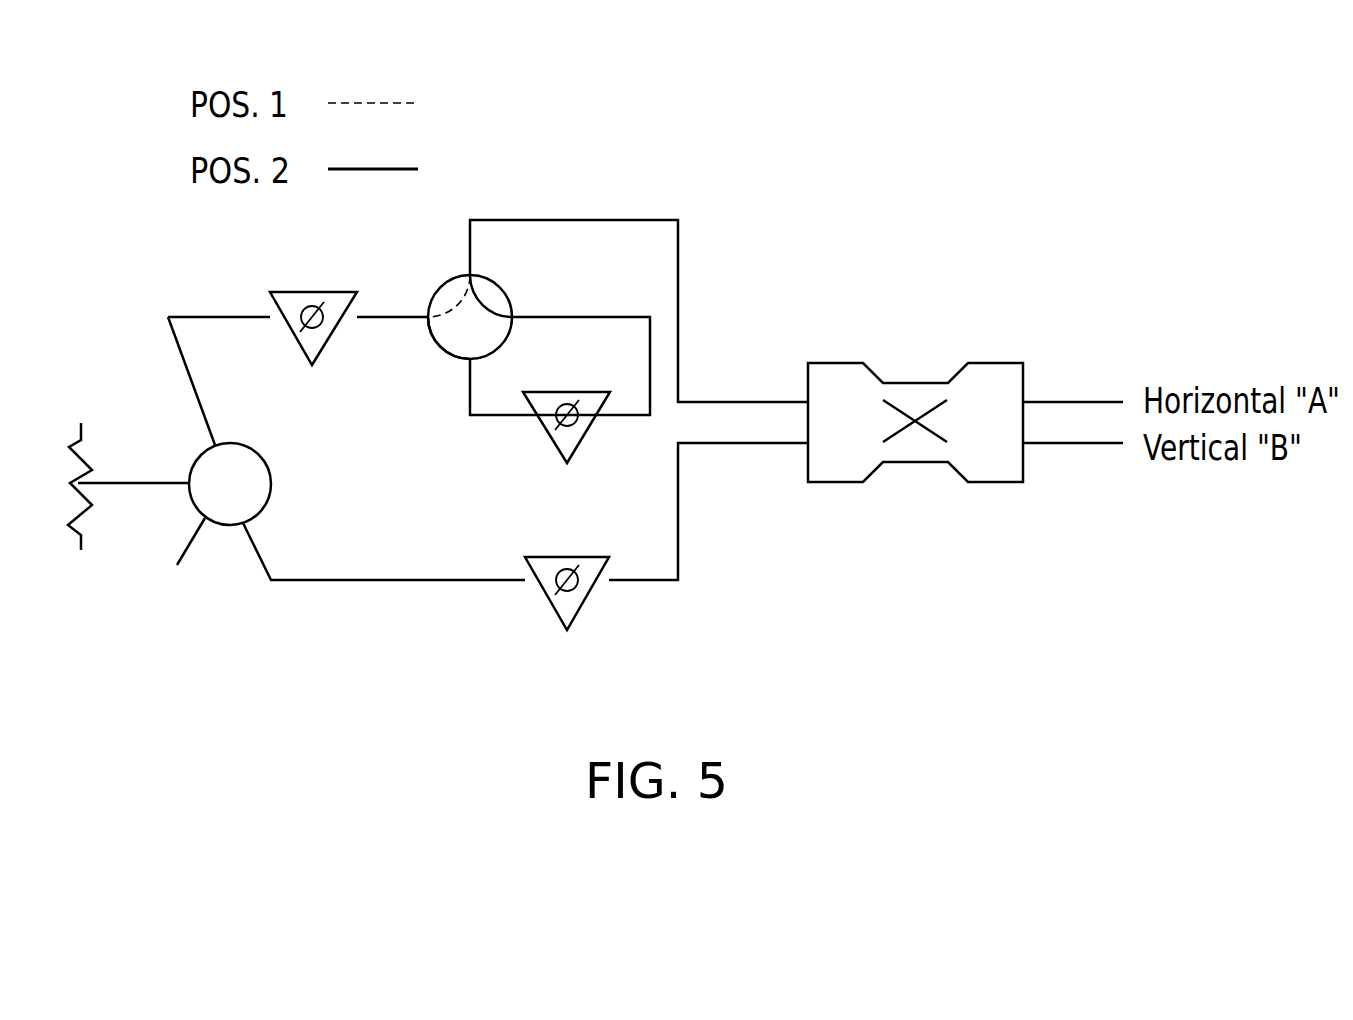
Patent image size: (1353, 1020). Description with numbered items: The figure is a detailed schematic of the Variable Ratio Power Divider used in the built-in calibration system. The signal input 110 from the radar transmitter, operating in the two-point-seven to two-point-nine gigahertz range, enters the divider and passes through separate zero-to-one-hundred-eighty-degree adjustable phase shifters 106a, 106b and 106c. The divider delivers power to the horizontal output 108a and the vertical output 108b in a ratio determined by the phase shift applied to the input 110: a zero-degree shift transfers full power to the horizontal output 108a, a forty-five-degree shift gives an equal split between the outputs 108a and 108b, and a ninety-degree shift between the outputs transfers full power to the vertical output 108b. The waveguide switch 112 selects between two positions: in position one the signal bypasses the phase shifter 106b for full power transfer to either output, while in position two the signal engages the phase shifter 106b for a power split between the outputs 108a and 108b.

The adjustable phase shifter 106a is at (548, 607).
The adjustable phase shifter 106b is at (545, 442).
The adjustable phase shifter 106c is at (295, 292).
The horizontal output 108a is at (1081, 400).
The vertical output 108b is at (1080, 445).
The signal input 110 is at (128, 538).
The waveguide switch 112 is at (510, 297).